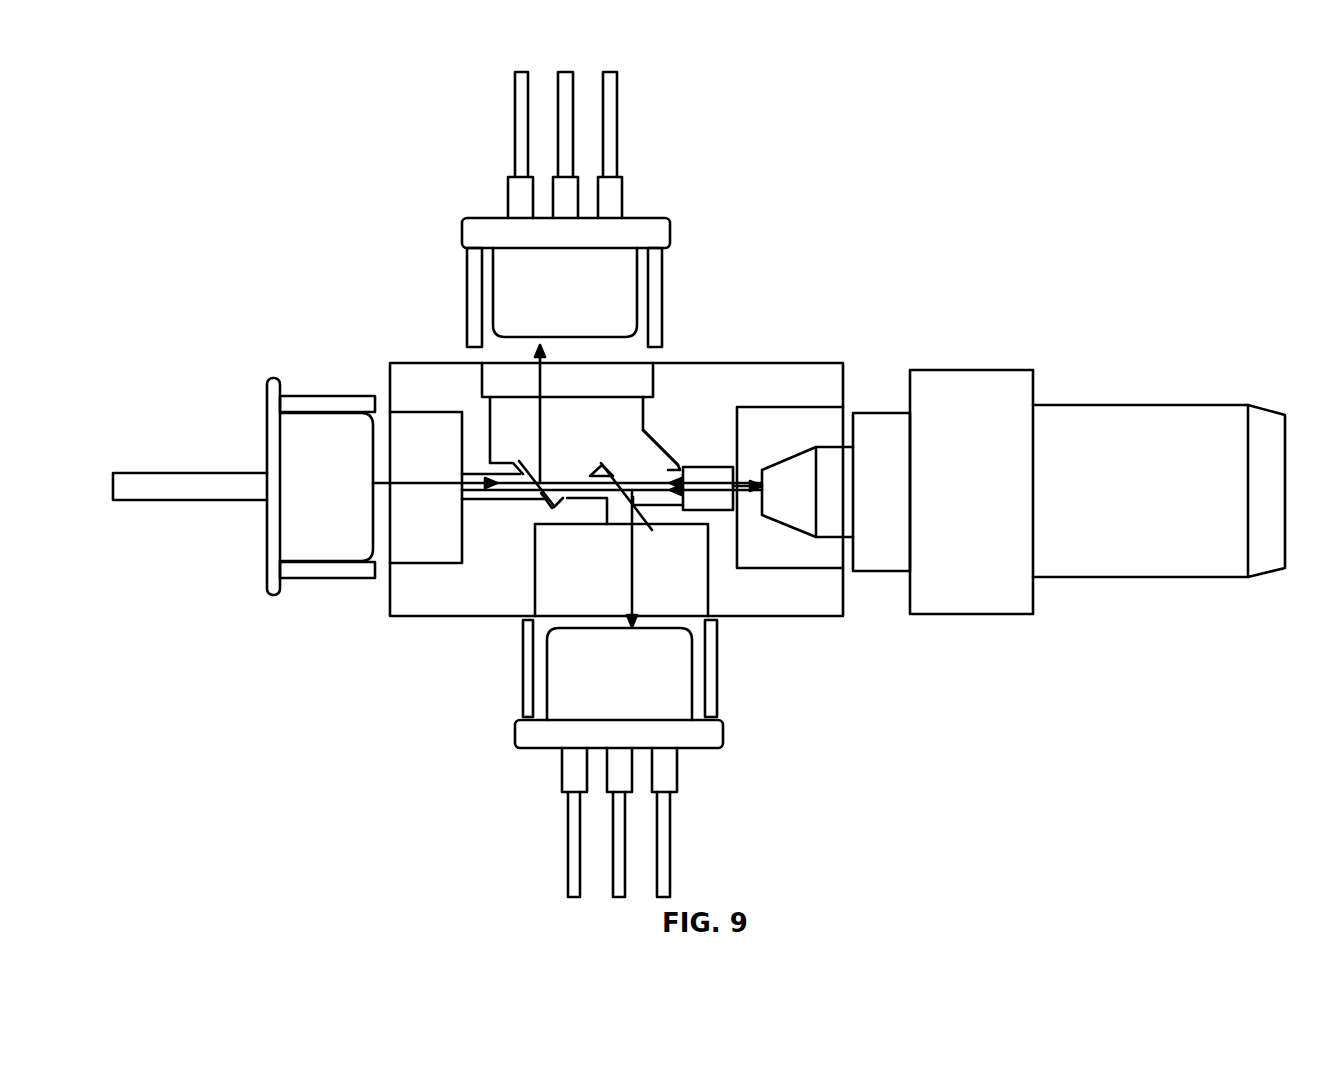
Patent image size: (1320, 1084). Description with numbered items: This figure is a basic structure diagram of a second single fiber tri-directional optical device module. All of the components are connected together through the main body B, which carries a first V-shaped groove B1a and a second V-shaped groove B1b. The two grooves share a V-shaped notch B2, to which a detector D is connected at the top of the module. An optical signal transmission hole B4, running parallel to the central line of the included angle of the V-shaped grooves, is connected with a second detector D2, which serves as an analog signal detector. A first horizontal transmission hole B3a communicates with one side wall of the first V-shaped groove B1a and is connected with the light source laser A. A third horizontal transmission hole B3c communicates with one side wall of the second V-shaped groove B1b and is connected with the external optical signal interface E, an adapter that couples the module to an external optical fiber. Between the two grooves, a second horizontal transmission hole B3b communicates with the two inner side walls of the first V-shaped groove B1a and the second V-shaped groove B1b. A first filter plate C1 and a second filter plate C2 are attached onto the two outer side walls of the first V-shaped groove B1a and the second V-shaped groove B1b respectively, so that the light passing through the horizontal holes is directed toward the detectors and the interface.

The laser A is at (322, 460).
The main body B is at (822, 592).
The first V-shaped groove B1a is at (550, 497).
The second V-shaped groove B1b is at (640, 510).
The V-shaped notch B2 is at (630, 375).
The first horizontal transmission hole B3a is at (492, 482).
The second horizontal transmission hole B3b is at (600, 495).
The third horizontal transmission hole B3c is at (678, 465).
The optical signal transmission hole B4 is at (620, 512).
The first filter plate C1 is at (540, 492).
The second filter plate C2 is at (645, 428).
The top optical sub-assembly D is at (532, 257).
The second detector D2 is at (587, 658).
The external optical signal interface E is at (973, 430).